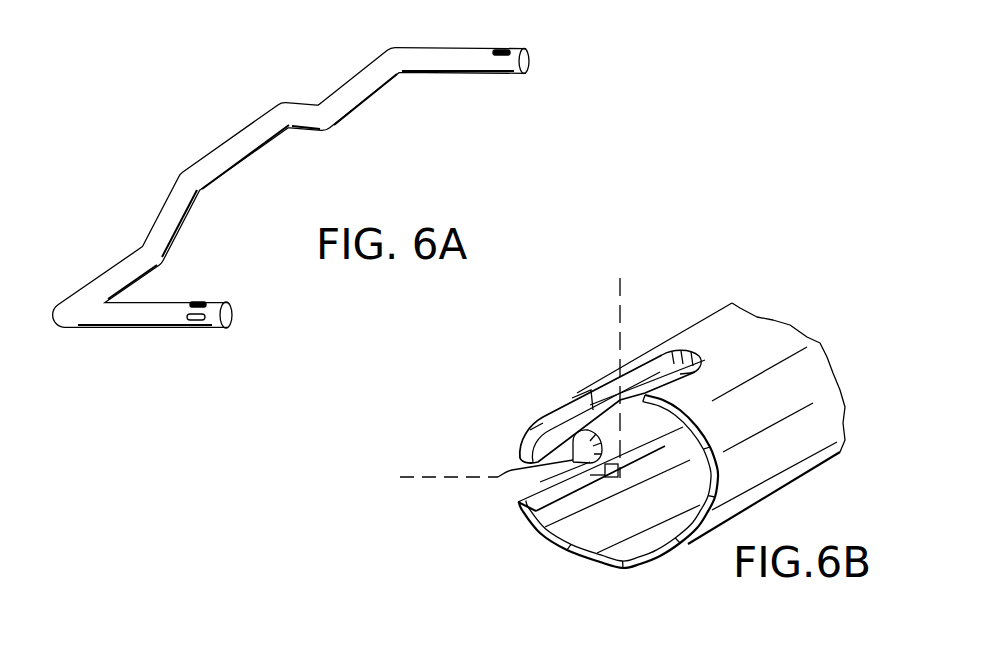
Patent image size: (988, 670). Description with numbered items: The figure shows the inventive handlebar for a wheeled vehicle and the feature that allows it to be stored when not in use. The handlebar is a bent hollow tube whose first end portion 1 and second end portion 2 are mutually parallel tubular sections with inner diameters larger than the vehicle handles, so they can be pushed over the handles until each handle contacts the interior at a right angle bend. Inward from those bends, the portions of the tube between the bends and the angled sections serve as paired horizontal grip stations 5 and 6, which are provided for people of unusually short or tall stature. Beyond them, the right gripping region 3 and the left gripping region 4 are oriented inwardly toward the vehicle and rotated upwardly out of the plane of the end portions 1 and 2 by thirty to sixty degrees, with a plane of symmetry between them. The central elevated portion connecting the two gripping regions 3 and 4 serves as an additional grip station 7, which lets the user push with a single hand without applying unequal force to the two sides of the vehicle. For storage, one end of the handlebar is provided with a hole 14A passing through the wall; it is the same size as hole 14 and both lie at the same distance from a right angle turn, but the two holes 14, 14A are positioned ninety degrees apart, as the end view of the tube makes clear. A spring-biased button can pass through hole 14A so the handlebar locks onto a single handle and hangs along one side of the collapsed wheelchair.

In FIG. 6A, the first end portion 1 is at (123, 330).
In FIG. 6B, the first end portion 1 is at (613, 565).
In FIG. 6A, the second end portion 2 is at (450, 48).
In FIG. 6A, the right gripping region 3 is at (170, 194).
In FIG. 6A, the left gripping region 4 is at (312, 98).
In FIG. 6A, the grip station 5 is at (120, 262).
In FIG. 6B, the grip station 5 is at (767, 334).
In FIG. 6A, the grip station 6 is at (358, 70).
In FIG. 6A, the additional grip station 7 is at (228, 140).
In FIG. 6A, the hole 14 is at (197, 301).
In FIG. 6B, the hole 14 is at (645, 359).
In FIG. 6A, the hole 14A is at (207, 321).
In FIG. 6B, the hole 14A is at (518, 502).